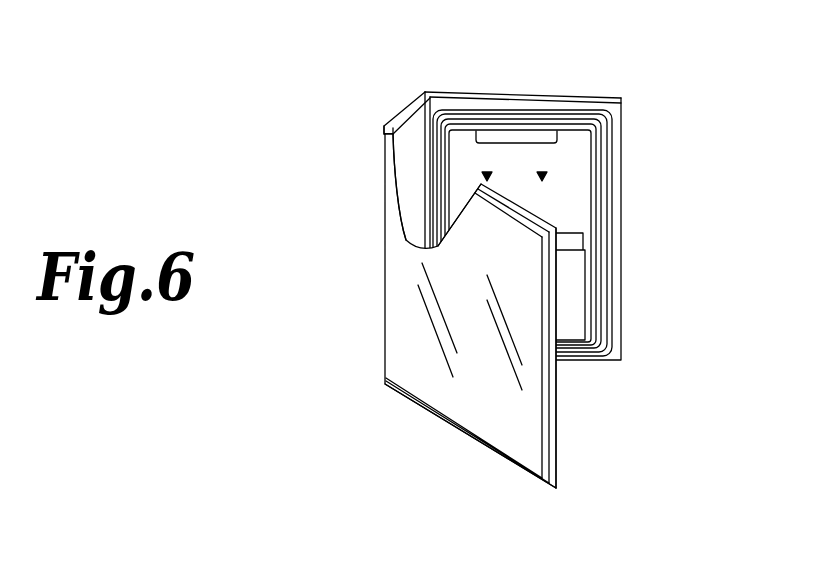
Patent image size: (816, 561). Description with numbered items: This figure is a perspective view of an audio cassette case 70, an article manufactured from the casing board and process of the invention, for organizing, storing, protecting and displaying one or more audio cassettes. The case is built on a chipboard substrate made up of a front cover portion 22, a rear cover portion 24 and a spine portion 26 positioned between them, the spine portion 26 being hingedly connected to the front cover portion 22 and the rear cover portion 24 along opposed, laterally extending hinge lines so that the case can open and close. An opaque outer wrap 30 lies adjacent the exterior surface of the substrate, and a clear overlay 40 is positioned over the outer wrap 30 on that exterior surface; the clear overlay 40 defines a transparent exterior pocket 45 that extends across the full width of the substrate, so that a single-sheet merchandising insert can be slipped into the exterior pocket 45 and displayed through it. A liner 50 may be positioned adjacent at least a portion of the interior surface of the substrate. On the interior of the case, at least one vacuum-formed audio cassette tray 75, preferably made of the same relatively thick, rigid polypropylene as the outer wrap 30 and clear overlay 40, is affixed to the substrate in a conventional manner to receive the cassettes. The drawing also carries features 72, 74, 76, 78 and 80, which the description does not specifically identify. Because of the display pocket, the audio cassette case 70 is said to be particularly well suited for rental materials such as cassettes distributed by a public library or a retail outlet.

The audio cassette case 70 is at (496, 182).
The top wall of frame 76 is at (485, 95).
The side wall bezel 74 is at (621, 162).
The rear cover portion 24 is at (618, 208).
The spine portion 26 is at (402, 115).
The opaque outer wrap 30 is at (384, 134).
The liner 50 is at (420, 199).
The vacuum-formed audio cassette tray 75 is at (460, 183).
The front cover portion 22 is at (487, 317).
The transparent exterior pocket 45 is at (503, 410).
The panel top edge 80 is at (542, 289).
The panel bottom edge 78 is at (413, 402).
The panel side edge 72 is at (559, 428).
The clear overlay 40 is at (547, 444).